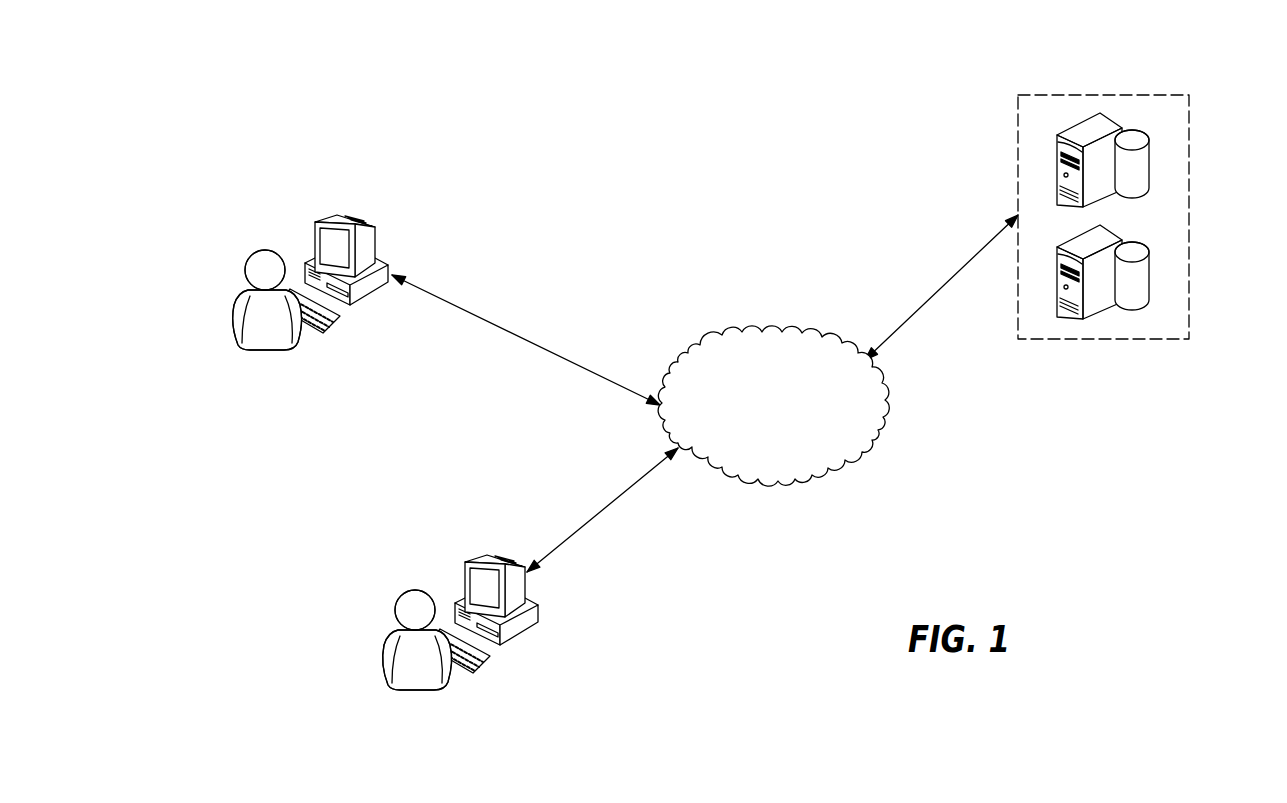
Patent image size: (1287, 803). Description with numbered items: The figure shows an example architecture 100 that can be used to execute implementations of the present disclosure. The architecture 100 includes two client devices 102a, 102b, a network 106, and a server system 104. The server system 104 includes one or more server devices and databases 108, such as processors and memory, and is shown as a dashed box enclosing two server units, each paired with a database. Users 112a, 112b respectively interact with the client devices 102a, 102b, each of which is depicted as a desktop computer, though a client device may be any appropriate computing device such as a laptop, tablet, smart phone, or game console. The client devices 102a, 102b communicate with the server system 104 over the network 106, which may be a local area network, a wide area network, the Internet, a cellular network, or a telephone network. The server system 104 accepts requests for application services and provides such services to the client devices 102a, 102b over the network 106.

The example architecture 100 is at (618, 86).
The client device 102a is at (316, 225).
The client device 102b is at (466, 565).
The server system 104 is at (1189, 217).
The network 106 is at (781, 332).
The server devices and databases 108 is at (1057, 157).
The user 112a is at (265, 350).
The user 112b is at (415, 690).